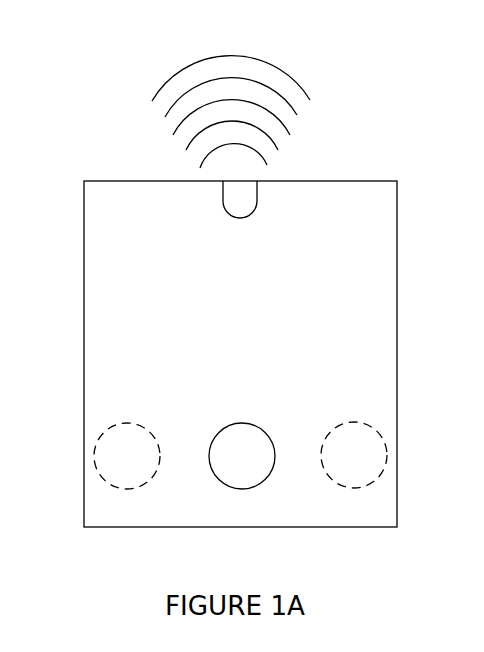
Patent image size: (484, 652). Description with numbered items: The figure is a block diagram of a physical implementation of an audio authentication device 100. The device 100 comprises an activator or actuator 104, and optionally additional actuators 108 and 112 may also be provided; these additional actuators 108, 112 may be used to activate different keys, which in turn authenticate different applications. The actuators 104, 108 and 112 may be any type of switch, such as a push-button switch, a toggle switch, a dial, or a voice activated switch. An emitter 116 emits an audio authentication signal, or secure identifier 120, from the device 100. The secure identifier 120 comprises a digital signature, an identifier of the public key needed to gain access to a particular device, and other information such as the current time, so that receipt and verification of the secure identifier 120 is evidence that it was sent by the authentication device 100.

The authentication device 100 is at (105, 64).
The actuator 104 is at (267, 478).
The additional actuator 108 is at (112, 487).
The additional actuator 112 is at (382, 472).
The emitter 116 is at (257, 193).
The secure identifier 120 is at (290, 74).